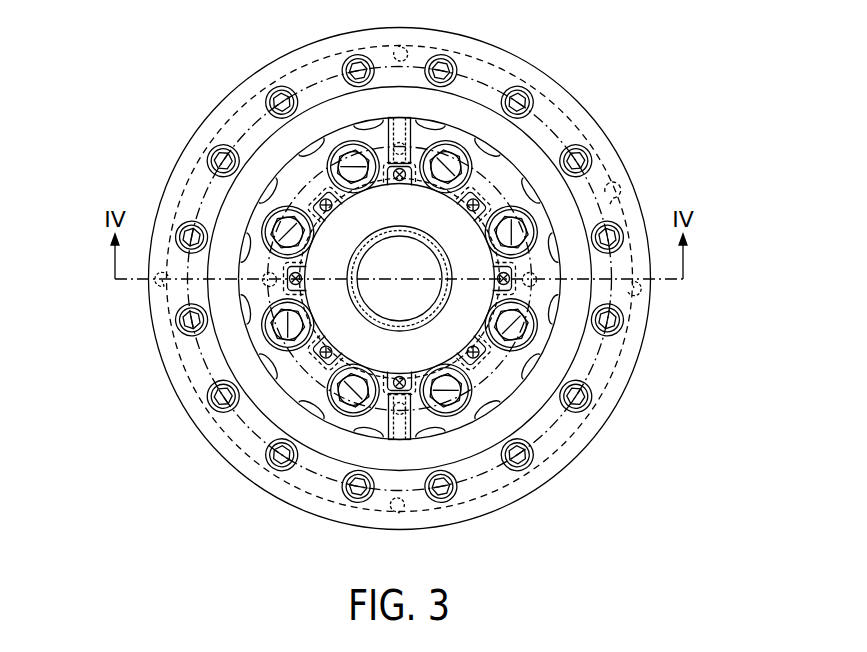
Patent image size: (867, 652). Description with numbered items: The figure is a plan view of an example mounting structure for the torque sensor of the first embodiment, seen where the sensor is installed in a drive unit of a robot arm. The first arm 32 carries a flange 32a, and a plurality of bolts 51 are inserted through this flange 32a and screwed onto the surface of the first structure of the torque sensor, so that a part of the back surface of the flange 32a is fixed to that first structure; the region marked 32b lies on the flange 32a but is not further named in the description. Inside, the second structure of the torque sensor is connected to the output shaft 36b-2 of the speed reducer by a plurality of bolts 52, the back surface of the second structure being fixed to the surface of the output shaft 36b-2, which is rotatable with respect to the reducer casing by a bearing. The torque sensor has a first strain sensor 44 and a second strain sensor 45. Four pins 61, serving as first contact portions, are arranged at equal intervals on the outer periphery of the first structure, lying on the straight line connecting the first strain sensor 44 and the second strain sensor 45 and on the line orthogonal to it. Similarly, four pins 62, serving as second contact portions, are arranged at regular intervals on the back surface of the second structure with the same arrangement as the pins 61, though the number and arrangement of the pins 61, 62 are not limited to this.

The first arm 32 is at (525, 146).
The flange 32a is at (610, 138).
The hole of flange 32b is at (606, 196).
The output shaft 36b-2 is at (312, 370).
The first strain sensor 44 is at (380, 133).
The second strain sensor 45 is at (387, 425).
The bolts 51 is at (272, 100).
The bolts 52 is at (317, 232).
The pins 61 is at (420, 48).
The pins 62 is at (412, 130).